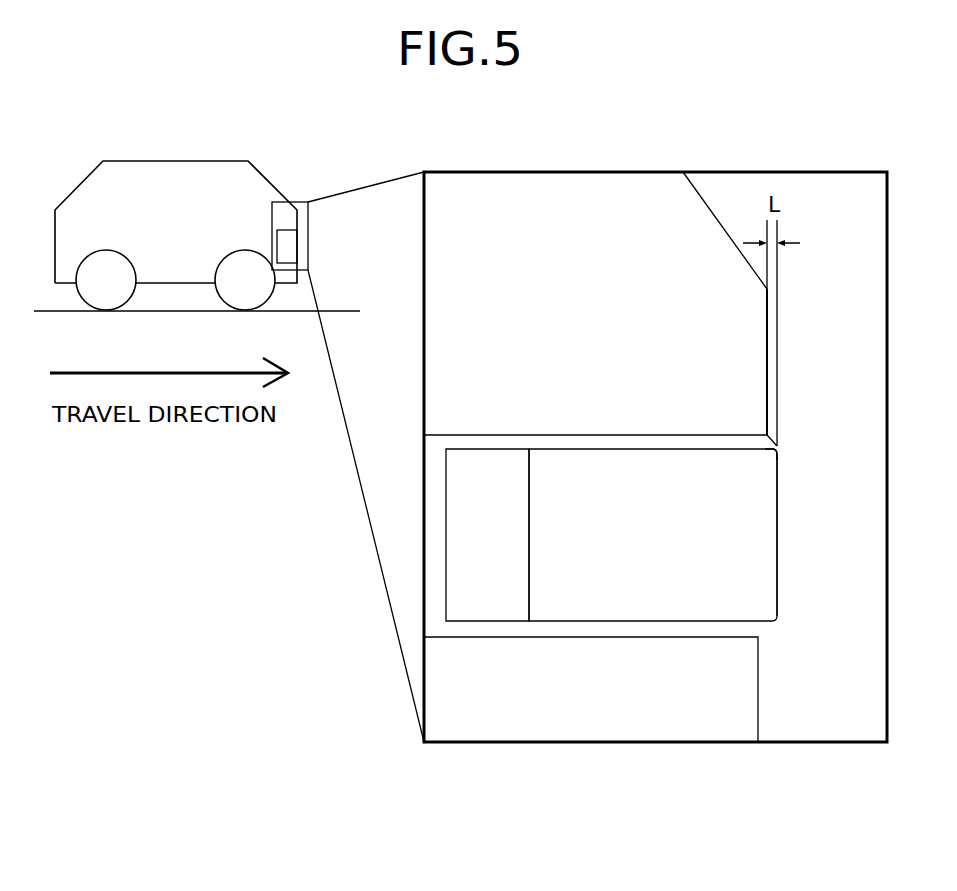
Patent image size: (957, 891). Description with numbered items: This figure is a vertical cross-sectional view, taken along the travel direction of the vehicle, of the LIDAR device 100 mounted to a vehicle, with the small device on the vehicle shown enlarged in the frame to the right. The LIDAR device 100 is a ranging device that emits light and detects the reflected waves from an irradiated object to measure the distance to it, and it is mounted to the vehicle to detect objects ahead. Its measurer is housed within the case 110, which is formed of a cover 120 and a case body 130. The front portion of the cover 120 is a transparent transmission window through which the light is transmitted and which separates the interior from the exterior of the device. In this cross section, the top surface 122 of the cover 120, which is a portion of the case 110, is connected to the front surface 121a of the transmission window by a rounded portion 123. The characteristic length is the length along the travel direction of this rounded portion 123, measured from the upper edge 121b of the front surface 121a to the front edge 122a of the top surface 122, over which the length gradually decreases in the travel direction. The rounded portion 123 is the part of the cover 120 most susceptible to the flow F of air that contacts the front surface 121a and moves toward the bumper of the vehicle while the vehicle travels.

The LIDAR device 100 is at (287, 230).
The case 110 is at (622, 451).
The cover 120 is at (700, 552).
The front surface 121a is at (778, 556).
The upper edge 121b is at (778, 456).
The top surface 122 is at (709, 435).
The front edge 122a is at (778, 428).
The rounded portion 123 is at (790, 437).
The case body 130 is at (476, 568).
The flow of air F is at (808, 440).